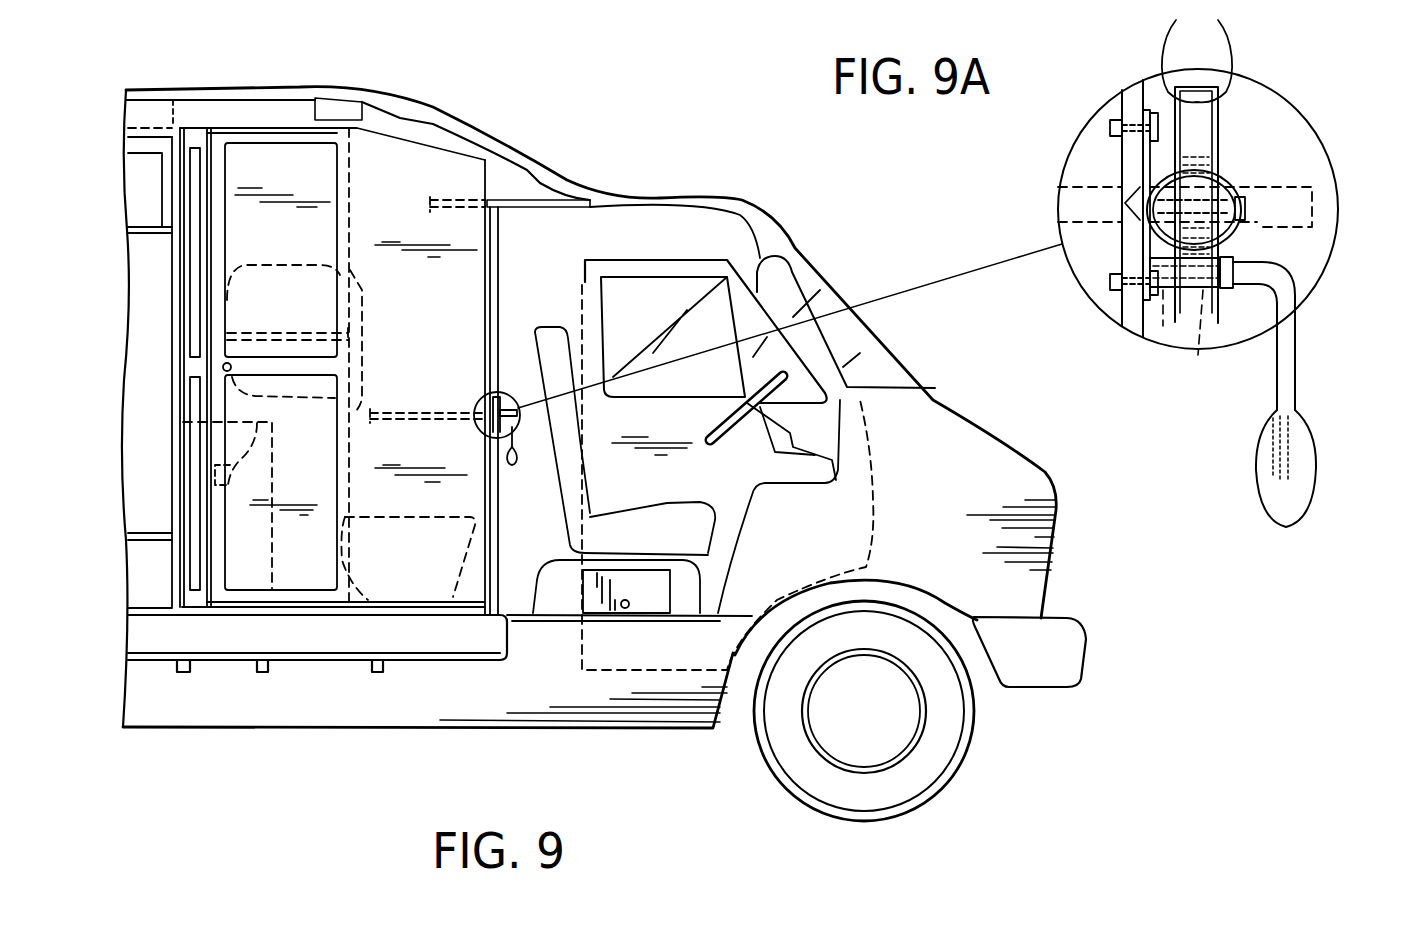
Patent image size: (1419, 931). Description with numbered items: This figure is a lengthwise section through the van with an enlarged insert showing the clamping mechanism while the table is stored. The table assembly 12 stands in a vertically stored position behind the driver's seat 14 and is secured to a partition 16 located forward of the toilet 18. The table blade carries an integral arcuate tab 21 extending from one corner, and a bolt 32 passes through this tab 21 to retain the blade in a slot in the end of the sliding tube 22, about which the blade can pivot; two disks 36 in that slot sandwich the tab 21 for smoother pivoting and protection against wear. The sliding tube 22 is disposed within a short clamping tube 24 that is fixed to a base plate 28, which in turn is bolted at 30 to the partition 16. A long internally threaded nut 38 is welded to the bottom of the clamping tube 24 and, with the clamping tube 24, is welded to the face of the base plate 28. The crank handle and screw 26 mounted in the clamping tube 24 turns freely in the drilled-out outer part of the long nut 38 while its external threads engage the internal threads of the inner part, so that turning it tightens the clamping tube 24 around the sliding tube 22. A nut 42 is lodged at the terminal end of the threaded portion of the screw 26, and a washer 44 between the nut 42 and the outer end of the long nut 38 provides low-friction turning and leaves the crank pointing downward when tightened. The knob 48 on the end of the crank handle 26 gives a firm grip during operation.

In FIG. 9, the table assembly 12 is at (476, 398).
In FIG. 9A, the table assembly 12 is at (1302, 156).
In FIG. 9, the driver's seat 14 is at (658, 543).
In FIG. 9, the partition 16 is at (495, 282).
In FIG. 9A, the partition 16 is at (1120, 108).
In FIG. 9, the toilet 18 is at (418, 568).
In FIG. 9A, the arcuate tab 21 is at (1205, 123).
In FIG. 9A, the sliding tube 22 is at (1227, 173).
In FIG. 9A, the short clamping tube 24 is at (1235, 233).
In FIG. 9A, the crank handle and screw 26 is at (1297, 348).
In FIG. 9A, the base plate 28 is at (1147, 302).
In FIG. 9A, the bolts 30 is at (1108, 127).
In FIG. 9A, the bolt 32 is at (1245, 208).
In FIG. 9A, the disks 36 is at (1197, 58).
In FIG. 9A, the long internally threaded nut 38 is at (1165, 312).
In FIG. 9A, the nut 42 is at (1229, 290).
In FIG. 9A, the washer 44 is at (1218, 290).
In FIG. 9A, the knob 48 is at (1310, 446).